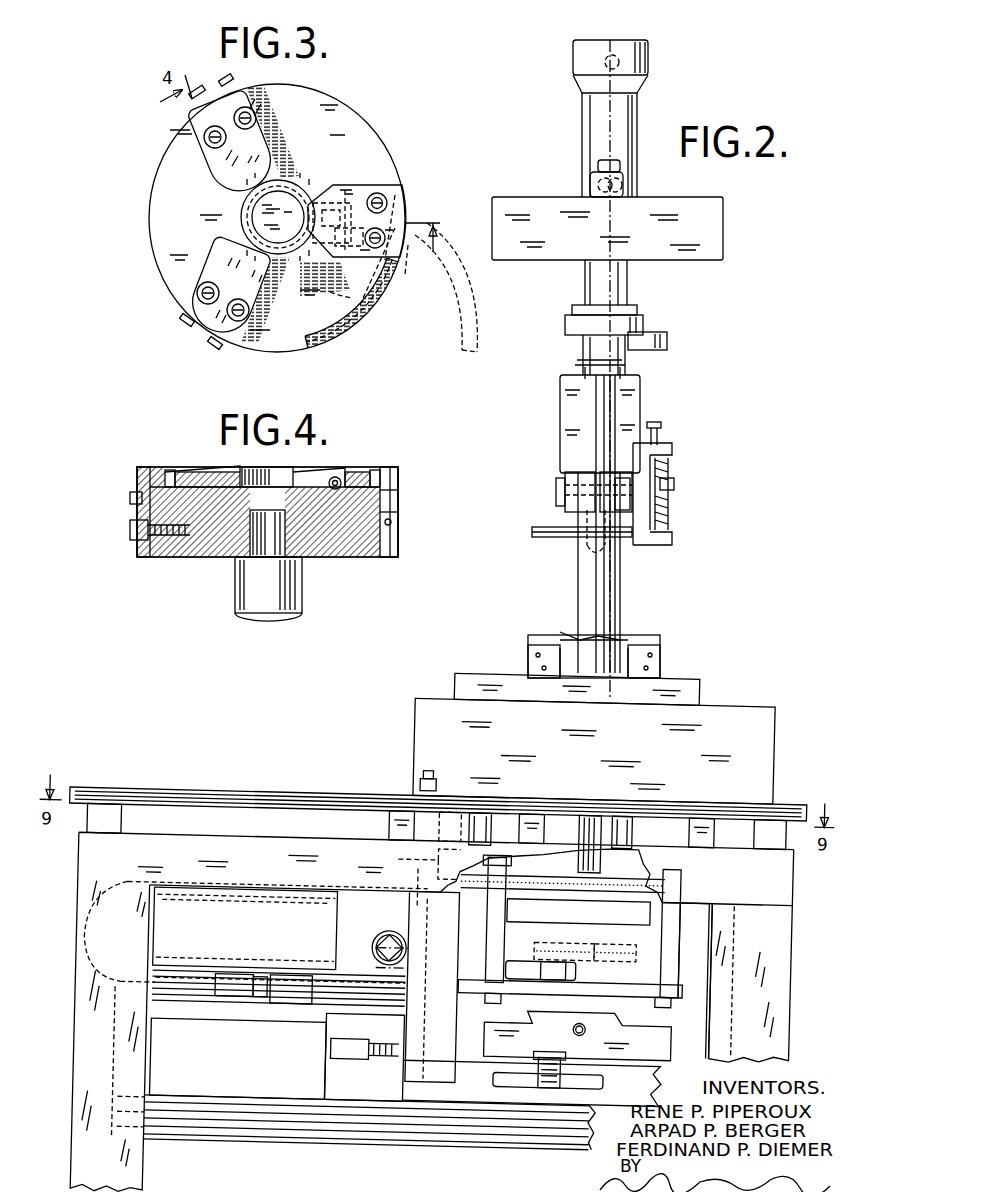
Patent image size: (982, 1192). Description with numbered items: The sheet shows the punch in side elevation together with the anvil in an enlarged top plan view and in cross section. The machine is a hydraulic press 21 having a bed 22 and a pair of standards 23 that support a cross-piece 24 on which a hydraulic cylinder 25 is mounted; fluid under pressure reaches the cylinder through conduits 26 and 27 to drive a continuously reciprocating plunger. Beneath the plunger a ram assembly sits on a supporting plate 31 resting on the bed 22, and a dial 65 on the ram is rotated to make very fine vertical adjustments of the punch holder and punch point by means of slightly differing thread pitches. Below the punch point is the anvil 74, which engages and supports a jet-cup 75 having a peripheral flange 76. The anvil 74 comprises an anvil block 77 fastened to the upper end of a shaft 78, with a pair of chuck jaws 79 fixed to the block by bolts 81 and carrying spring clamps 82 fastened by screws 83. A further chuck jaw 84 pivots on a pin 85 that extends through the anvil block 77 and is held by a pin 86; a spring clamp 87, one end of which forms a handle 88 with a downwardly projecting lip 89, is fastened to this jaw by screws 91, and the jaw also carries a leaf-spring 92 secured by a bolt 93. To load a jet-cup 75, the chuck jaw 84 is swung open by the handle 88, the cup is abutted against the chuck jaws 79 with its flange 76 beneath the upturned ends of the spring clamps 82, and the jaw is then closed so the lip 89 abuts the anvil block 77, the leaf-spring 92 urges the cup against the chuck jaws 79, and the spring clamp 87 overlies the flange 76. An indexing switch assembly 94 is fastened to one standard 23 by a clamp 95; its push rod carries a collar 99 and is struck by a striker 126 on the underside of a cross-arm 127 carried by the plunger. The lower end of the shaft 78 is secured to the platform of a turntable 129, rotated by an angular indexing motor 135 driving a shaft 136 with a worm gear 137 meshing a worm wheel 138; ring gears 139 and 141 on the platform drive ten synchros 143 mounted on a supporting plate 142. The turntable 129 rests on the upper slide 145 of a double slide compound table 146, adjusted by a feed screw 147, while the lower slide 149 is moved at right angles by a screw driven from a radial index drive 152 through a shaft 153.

In FIG. 2, the hydraulic press 21 is at (555, 434).
In FIG. 2, the bed 22 is at (413, 729).
In FIG. 2, the standards 23 is at (580, 588).
In FIG. 2, the cross-piece 24 is at (548, 204).
In FIG. 2, the hydraulic cylinder 25 is at (590, 138).
In FIG. 2, the conduit 26 is at (604, 62).
In FIG. 2, the conduit 27 is at (620, 187).
In FIG. 2, the supporting plate 31 is at (687, 666).
In FIG. 2, the dial 65 is at (542, 536).
In FIG. 4, the anvil 74 is at (358, 565).
In FIG. 2, the anvil 74 is at (630, 632).
In FIG. 3, the jet-cup 75 is at (253, 210).
In FIG. 4, the jet-cup 75 is at (278, 478).
In FIG. 3, the flange 76 is at (303, 193).
In FIG. 4, the flange 76 is at (256, 474).
In FIG. 3, the anvil block 77 is at (150, 218).
In FIG. 4, the anvil block 77 is at (398, 551).
In FIG. 4, the shaft 78 is at (240, 601).
In FIG. 2, the shaft 78 is at (592, 822).
In FIG. 3, the chuck jaws 79 is at (290, 199).
In FIG. 4, the chuck jaws 79 is at (138, 478).
In FIG. 3, the bolts 81 is at (226, 82).
In FIG. 4, the bolts 81 is at (130, 528).
In FIG. 3, the spring clamps 82 is at (222, 173).
In FIG. 4, the spring clamps 82 is at (197, 471).
In FIG. 3, the screws 83 is at (245, 130).
In FIG. 4, the screws 83 is at (172, 470).
In FIG. 3, the chuck jaw 84 is at (358, 200).
In FIG. 4, the chuck jaw 84 is at (398, 486).
In FIG. 3, the pin 85 is at (402, 216).
In FIG. 4, the pin 85 is at (398, 507).
In FIG. 3, the pin 86 is at (397, 268).
In FIG. 4, the pin 86 is at (393, 523).
In FIG. 3, the spring clamp 87 is at (345, 188).
In FIG. 4, the spring clamp 87 is at (338, 476).
In FIG. 3, the handle 88 is at (345, 322).
In FIG. 4, the lip 89 is at (398, 472).
In FIG. 3, the screws 91 is at (379, 195).
In FIG. 4, the screws 91 is at (378, 470).
In FIG. 3, the leaf-spring 92 is at (320, 248).
In FIG. 4, the leaf-spring 92 is at (318, 477).
In FIG. 3, the bolt 93 is at (335, 262).
In FIG. 4, the bolt 93 is at (352, 478).
In FIG. 2, the indexing switch assembly 94 is at (683, 470).
In FIG. 2, the clamp 95 is at (574, 505).
In FIG. 2, the collar 99 is at (657, 428).
In FIG. 2, the striker 126 is at (667, 343).
In FIG. 2, the cross-arm 127 is at (643, 328).
In FIG. 2, the turntable 129 is at (692, 927).
In FIG. 2, the angular indexing motor 135 is at (232, 895).
In FIG. 2, the shaft 136 is at (472, 940).
In FIG. 2, the worm gear 137 is at (577, 950).
In FIG. 2, the worm wheel 138 is at (579, 953).
In FIG. 2, the ring gear 139 is at (598, 879).
In FIG. 2, the ring gear 141 is at (548, 880).
In FIG. 2, the supporting plate 142 is at (400, 855).
In FIG. 2, the synchros 143 is at (481, 820).
In FIG. 2, the upper slide 145 is at (657, 1030).
In FIG. 2, the double slide compound table 146 is at (692, 1021).
In FIG. 2, the feed screw 147 is at (590, 1021).
In FIG. 2, the lower slide 149 is at (503, 1062).
In FIG. 2, the radial index drive 152 is at (258, 1093).
In FIG. 2, the shaft 153 is at (384, 1050).